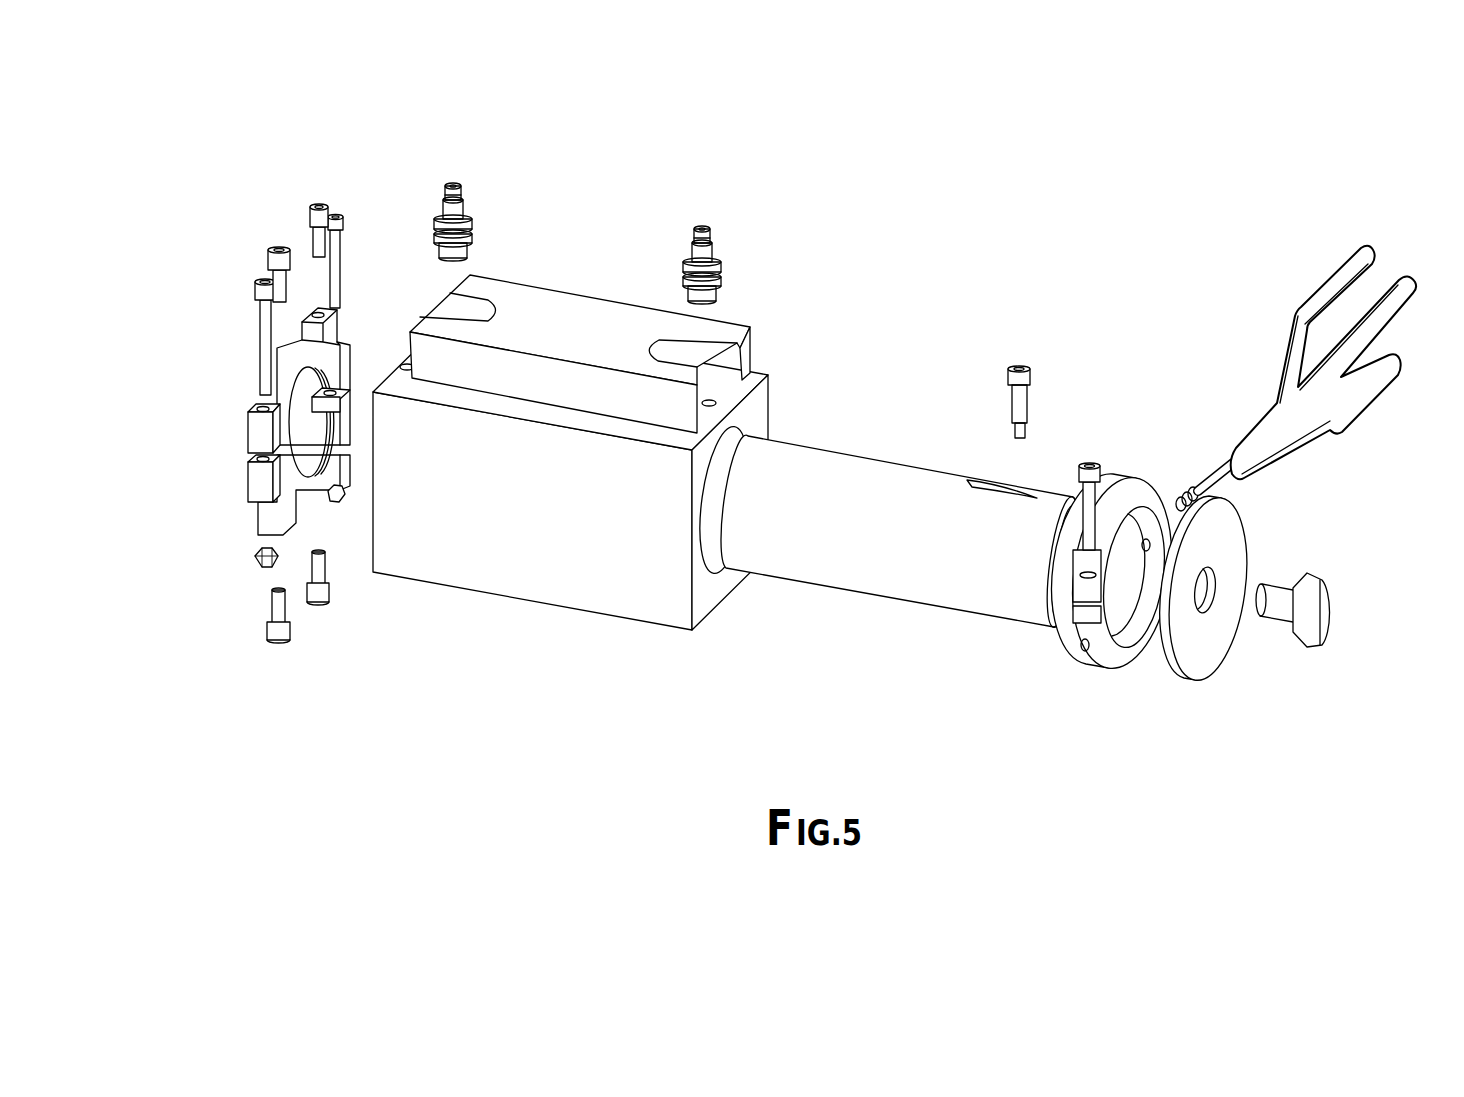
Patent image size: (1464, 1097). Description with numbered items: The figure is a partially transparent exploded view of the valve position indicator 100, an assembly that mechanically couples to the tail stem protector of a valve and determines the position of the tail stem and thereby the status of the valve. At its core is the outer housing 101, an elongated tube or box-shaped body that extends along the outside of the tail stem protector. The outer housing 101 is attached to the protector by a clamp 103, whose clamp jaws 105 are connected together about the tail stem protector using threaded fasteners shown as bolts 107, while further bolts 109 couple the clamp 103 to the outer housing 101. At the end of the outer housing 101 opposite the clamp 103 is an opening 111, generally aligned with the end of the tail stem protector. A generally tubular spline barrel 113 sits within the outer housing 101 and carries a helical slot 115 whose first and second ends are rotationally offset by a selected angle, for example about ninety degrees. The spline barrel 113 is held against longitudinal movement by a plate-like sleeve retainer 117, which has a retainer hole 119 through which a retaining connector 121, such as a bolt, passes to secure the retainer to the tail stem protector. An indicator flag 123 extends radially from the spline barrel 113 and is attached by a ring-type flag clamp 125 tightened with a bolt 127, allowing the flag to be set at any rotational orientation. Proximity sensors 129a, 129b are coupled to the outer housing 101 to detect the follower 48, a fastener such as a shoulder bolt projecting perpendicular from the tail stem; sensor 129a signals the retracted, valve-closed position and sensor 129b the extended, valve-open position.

The valve position indicator 100 is at (1044, 134).
The outer housing 101 is at (600, 613).
The clamp 103 is at (206, 403).
The clamp jaws 105 is at (245, 443).
The bolts 107 is at (253, 317).
The bolts 109 is at (281, 249).
The opening 111 is at (703, 590).
The spline barrel 113 is at (987, 618).
The helical slot 115 is at (990, 477).
The sleeve retainer 117 is at (1180, 678).
The retainer hole 119 is at (1215, 585).
The retaining connector 121 is at (1336, 604).
The indicator flag 123 is at (1320, 265).
The flag clamp 125 is at (1113, 667).
The bolt 127 is at (1102, 468).
The proximity sensor 129a is at (468, 211).
The proximity sensor 129b is at (713, 248).
The follower 48 is at (1028, 397).